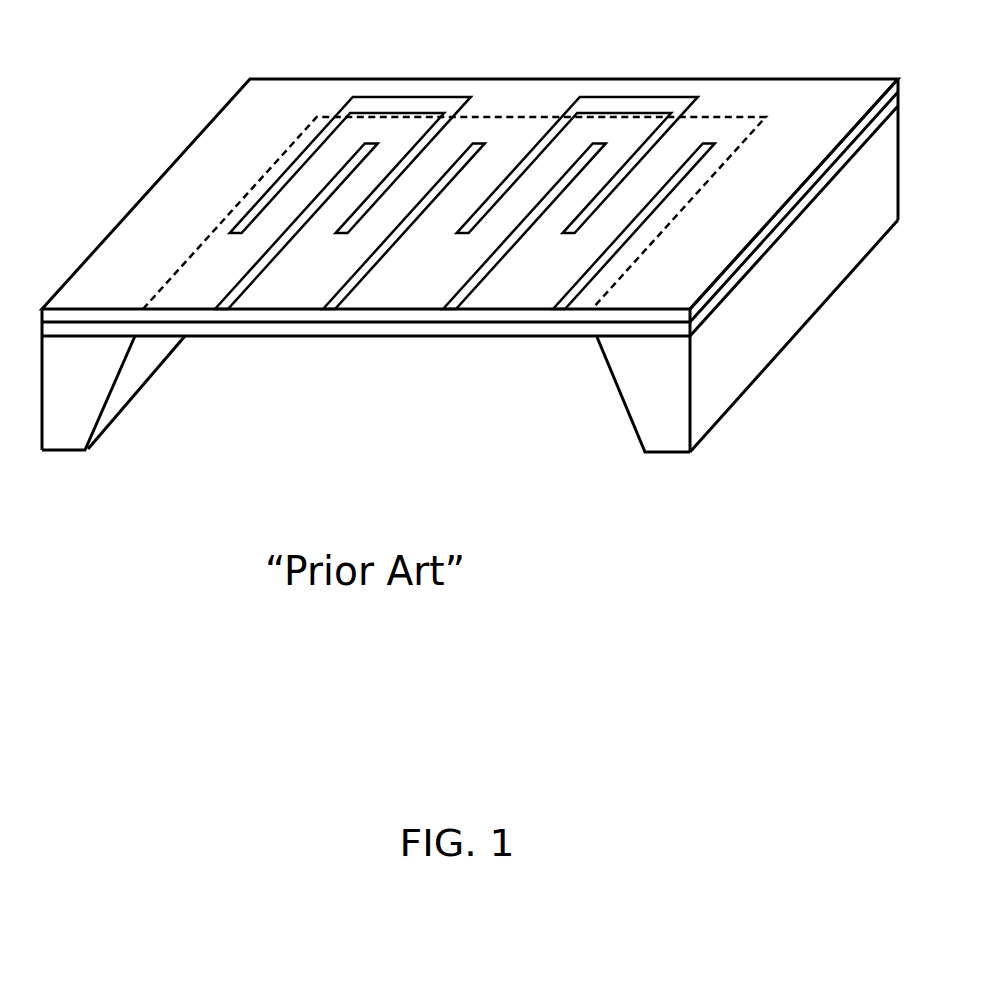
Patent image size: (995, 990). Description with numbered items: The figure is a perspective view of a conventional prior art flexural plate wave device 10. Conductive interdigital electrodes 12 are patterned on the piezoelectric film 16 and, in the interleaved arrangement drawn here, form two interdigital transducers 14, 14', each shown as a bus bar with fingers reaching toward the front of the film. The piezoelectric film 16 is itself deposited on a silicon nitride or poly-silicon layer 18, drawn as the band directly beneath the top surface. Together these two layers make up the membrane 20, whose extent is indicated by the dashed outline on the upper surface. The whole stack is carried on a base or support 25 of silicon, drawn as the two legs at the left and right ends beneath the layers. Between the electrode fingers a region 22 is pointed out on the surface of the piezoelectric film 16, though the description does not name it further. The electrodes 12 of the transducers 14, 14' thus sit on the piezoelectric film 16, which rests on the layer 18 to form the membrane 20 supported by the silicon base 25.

The flexural plate wave device 10 is at (128, 122).
The conductive interdigital electrodes 12 is at (341, 146).
The interdigital transducer 14 is at (350, 126).
The interdigital transducer 14' is at (580, 126).
The piezoelectric film 16 is at (147, 283).
The silicon nitride or poly-silicon layer 18 is at (297, 337).
The membrane 20 is at (733, 132).
The gap between electrode fingers 22 is at (532, 275).
The base or support 25 is at (99, 380).